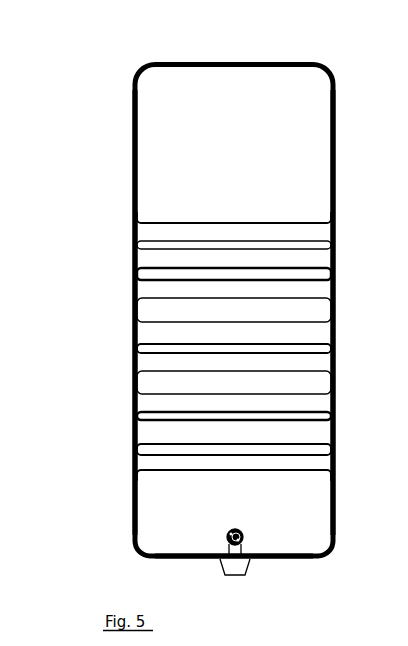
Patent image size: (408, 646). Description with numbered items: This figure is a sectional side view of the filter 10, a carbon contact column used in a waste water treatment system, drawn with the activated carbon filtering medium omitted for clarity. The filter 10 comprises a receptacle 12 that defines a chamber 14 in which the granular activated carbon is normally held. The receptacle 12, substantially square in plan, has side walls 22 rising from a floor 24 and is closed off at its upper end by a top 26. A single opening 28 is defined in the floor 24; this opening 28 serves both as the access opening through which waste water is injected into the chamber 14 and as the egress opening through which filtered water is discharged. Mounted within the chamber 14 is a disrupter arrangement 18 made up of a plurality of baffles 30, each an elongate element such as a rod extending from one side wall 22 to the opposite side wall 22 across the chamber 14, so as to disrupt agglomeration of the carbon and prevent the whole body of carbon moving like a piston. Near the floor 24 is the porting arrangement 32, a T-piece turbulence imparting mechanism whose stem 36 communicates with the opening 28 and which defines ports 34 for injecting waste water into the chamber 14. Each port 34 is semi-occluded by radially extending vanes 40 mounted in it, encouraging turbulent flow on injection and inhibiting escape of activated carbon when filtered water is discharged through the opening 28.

The filter 10 is at (205, 303).
The receptacle 12 is at (336, 101).
The chamber 14 is at (286, 165).
The disrupter arrangement 18 is at (110, 264).
The side walls 22 is at (335, 470).
The floor 24 is at (297, 561).
The top 26 is at (200, 60).
The opening 28 is at (246, 573).
The baffles 30 is at (295, 237).
The porting arrangement 32 is at (222, 541).
The ports 34 is at (246, 531).
The stem 36 is at (226, 548).
The vanes 40 is at (250, 537).